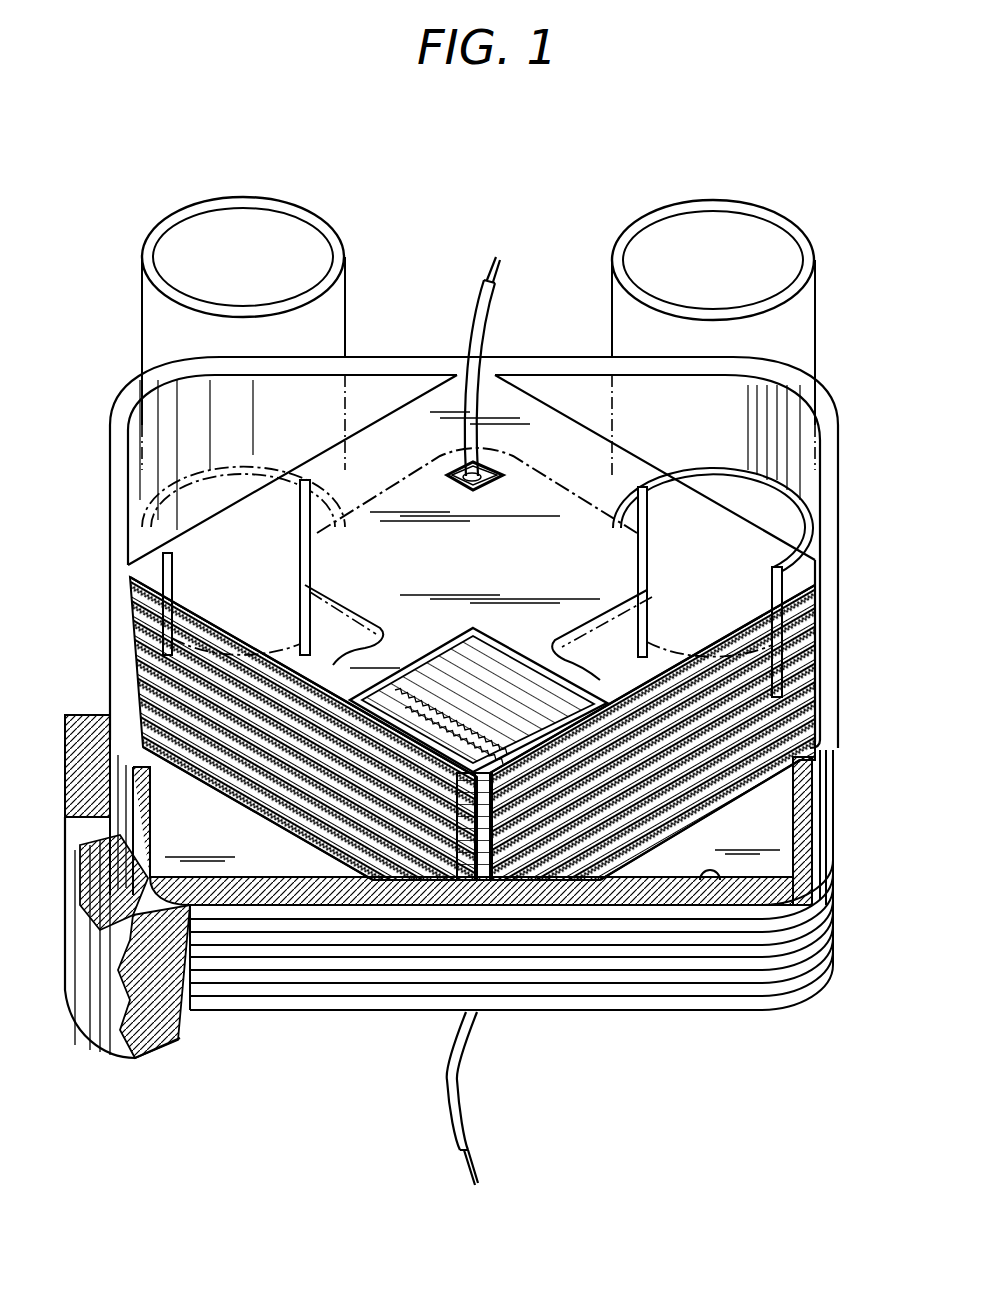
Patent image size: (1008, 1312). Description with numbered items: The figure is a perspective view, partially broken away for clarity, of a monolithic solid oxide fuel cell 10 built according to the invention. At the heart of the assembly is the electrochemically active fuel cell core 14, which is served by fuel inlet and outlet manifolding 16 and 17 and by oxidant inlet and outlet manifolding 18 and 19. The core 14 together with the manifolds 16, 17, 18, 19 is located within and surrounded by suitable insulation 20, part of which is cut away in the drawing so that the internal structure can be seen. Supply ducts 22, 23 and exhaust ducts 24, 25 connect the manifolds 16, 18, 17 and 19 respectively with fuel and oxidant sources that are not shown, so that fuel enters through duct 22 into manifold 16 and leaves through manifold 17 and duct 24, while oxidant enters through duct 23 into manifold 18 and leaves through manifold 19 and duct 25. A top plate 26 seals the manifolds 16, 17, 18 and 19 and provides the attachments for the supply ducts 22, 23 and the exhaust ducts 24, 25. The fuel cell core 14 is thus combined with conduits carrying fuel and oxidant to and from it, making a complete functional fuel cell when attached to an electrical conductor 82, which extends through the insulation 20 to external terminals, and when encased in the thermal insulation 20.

The monolithic solid oxide fuel cell 10 is at (643, 150).
The fuel cell core 14 is at (495, 584).
The fuel inlet manifolding 16 is at (226, 870).
The fuel outlet manifolding 17 is at (840, 425).
The oxidant inlet manifolding 18 is at (720, 882).
The oxidant outlet manifolding 19 is at (112, 398).
The insulation 20 is at (178, 1040).
The supply duct 22 is at (312, 558).
The supply duct 23 is at (628, 494).
The exhaust duct 24 is at (786, 220).
The exhaust duct 25 is at (346, 270).
The top plate 26 is at (389, 346).
The electrical conductor 82 is at (489, 300).